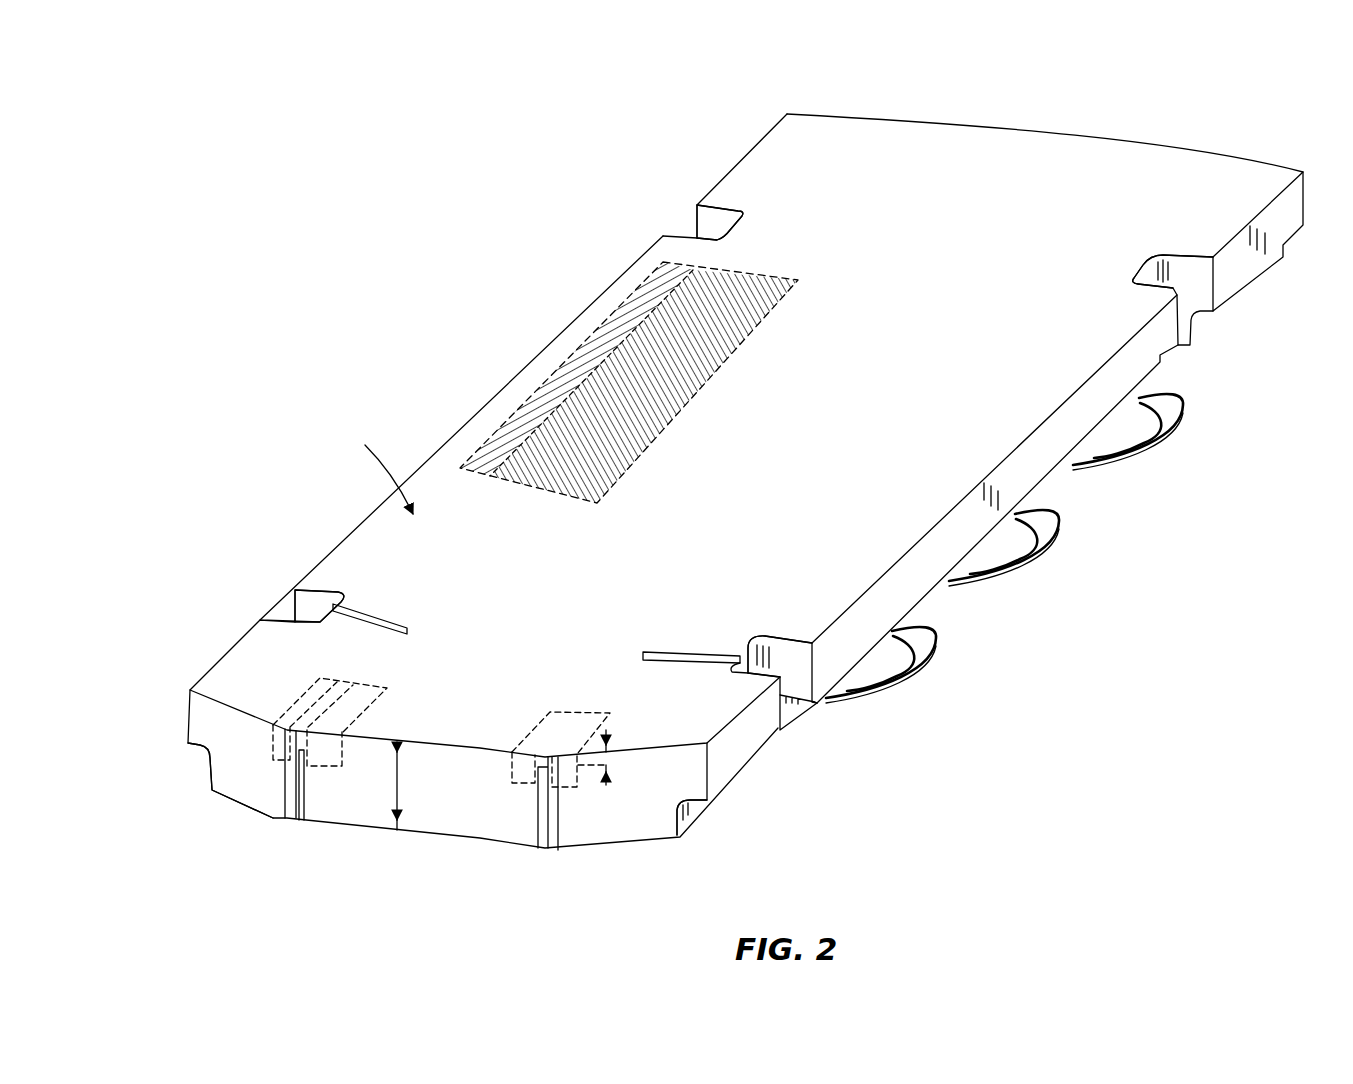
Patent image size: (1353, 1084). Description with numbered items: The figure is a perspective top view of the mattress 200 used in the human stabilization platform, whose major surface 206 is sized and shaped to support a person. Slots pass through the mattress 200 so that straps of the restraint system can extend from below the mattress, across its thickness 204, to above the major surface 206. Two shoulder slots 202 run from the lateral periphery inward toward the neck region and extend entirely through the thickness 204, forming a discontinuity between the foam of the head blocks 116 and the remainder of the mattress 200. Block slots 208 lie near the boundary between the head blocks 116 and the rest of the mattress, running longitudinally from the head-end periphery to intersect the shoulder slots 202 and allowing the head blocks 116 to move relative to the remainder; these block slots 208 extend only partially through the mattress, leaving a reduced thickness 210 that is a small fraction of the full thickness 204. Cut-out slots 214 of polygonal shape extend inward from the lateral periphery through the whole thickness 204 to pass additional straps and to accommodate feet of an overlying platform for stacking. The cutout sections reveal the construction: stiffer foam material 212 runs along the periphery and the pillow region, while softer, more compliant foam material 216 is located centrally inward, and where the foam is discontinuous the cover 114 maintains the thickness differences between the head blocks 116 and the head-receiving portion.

The mattress 200 is at (1116, 104).
The cover 114 is at (1020, 475).
The head blocks 116 is at (237, 768).
The shoulder slots 202 is at (367, 623).
The thickness 204 is at (397, 795).
The major surface 206 is at (374, 466).
The block slots 208 is at (300, 795).
The thickness 210 is at (610, 784).
The foam material 212 is at (540, 405).
The cut-out slots 214 is at (716, 216).
The foam material 216 is at (657, 353).